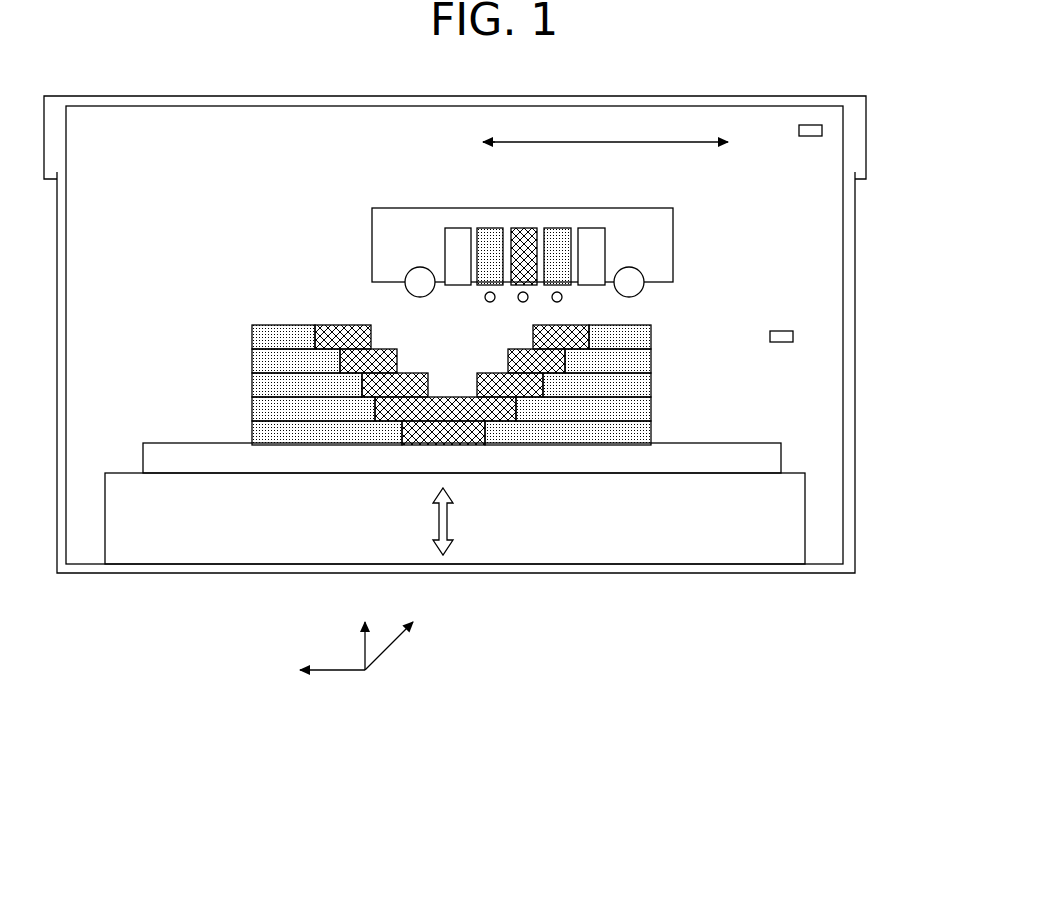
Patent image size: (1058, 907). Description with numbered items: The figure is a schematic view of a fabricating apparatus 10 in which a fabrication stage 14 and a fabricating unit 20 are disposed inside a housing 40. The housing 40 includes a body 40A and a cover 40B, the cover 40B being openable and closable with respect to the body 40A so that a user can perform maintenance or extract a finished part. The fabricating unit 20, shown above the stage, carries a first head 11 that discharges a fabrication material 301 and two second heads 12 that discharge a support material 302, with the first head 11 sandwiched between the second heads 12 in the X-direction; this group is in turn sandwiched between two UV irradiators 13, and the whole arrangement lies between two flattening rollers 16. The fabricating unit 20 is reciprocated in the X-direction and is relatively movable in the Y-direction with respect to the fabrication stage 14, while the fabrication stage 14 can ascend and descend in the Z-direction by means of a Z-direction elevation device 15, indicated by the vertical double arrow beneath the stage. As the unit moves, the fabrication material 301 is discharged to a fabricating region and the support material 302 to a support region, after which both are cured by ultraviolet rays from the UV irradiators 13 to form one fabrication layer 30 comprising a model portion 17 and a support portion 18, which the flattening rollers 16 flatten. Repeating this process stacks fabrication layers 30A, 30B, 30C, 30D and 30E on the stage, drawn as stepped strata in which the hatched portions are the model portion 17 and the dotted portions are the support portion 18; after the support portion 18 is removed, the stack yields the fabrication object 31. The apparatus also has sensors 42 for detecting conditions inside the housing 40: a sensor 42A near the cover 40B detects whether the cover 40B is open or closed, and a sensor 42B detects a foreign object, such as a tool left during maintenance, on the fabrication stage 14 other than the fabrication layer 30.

The fabricating apparatus 10 is at (803, 49).
The first head 11 is at (530, 240).
The second head 12 is at (490, 240).
The UV irradiator 13 is at (458, 240).
The fabrication stage 14 is at (195, 453).
The Z-direction elevation device 15 is at (127, 488).
The flattening roller 16 is at (420, 272).
The model portion 17 is at (511, 359).
The support portion 18 is at (275, 333).
The fabricating unit 20 is at (376, 203).
The fabrication layer 30 is at (511, 359).
The fabrication layer 30A is at (660, 433).
The fabrication layer 30B is at (660, 408).
The fabrication layer 30C is at (660, 385).
The fabrication layer 30D is at (727, 331).
The fabrication layer 30E is at (510, 311).
The fabrication object 31 is at (333, 330).
The housing 40 is at (498, 334).
The body 40A is at (850, 268).
The cover 40B is at (858, 158).
The sensor 42 is at (790, 233).
The sensor 42A is at (808, 137).
The sensor 42B is at (782, 329).
The fabrication material 301 is at (521, 302).
The support material 302 is at (485, 301).